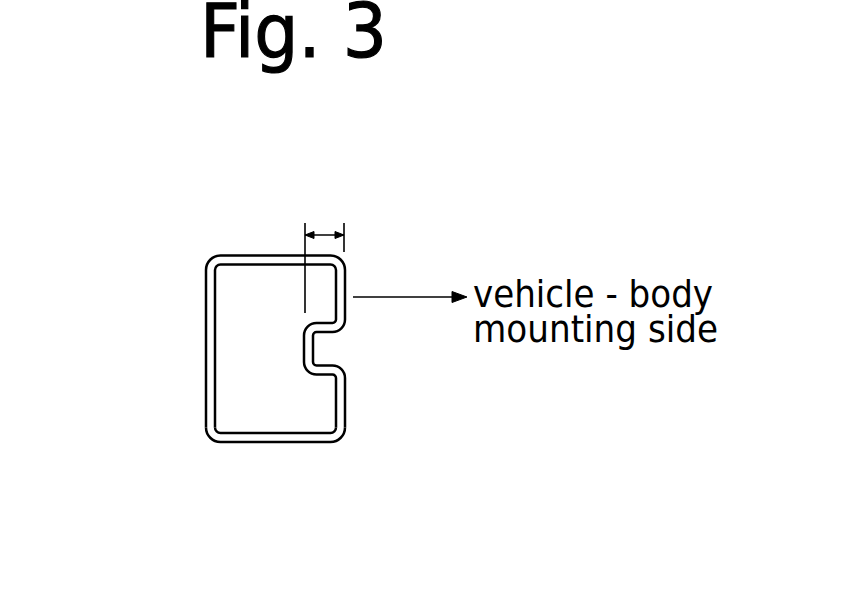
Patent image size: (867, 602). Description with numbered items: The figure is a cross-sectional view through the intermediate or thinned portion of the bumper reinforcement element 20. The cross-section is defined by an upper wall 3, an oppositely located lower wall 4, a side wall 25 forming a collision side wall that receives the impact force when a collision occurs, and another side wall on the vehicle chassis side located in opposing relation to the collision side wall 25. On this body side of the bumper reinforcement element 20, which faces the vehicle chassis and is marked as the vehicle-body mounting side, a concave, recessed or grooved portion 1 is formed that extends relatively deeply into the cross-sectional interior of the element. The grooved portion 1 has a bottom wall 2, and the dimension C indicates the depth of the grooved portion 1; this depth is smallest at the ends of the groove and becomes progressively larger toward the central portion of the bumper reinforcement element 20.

The bumper reinforcement element 20 is at (281, 337).
The upper wall 3 is at (247, 254).
The grooved portion 1 is at (321, 347).
The bottom wall 2 is at (302, 349).
The lower wall 4 is at (308, 443).
The side wall 25 is at (205, 358).
The depth of the grooved portion C is at (324, 244).